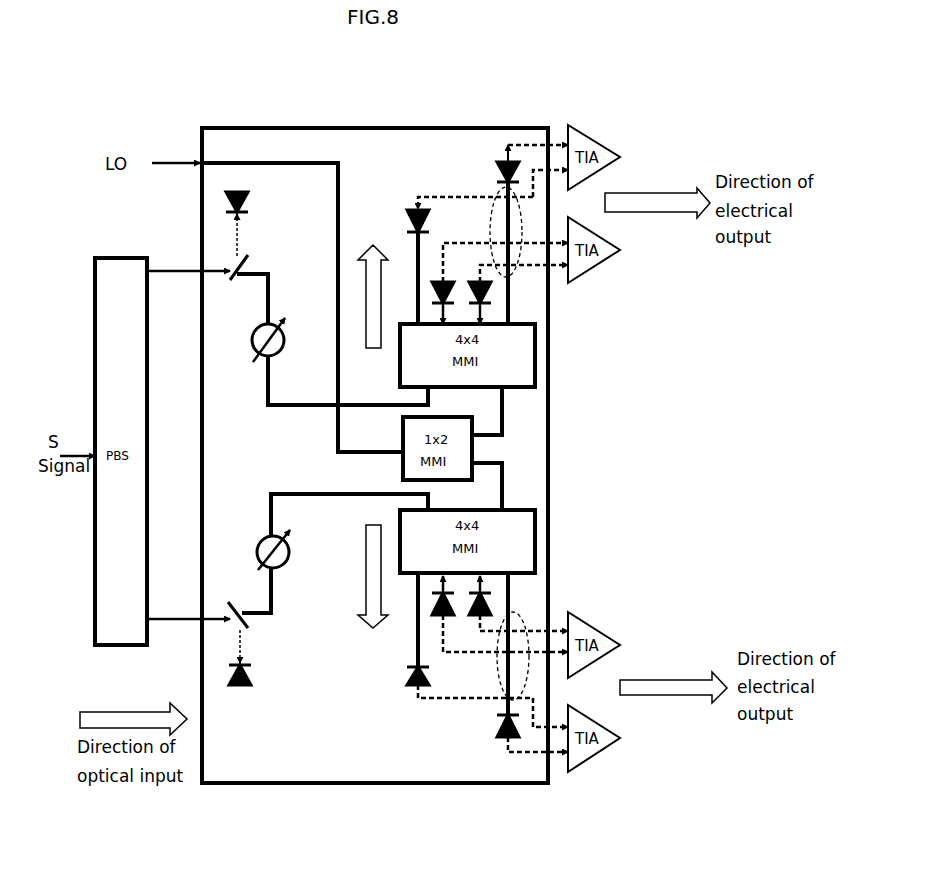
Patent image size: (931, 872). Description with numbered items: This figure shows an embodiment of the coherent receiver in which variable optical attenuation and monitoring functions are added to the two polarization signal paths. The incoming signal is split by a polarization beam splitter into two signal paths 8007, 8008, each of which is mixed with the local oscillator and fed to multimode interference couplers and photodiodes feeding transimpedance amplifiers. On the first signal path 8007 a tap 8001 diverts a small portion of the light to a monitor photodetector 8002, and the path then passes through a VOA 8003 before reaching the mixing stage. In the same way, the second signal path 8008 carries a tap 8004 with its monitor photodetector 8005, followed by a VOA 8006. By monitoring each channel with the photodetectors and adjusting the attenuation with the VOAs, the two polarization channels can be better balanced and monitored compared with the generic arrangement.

The tap 8001 is at (227, 262).
The monitor photodetector 8002 is at (238, 188).
The VOA 8003 is at (277, 317).
The tap 8004 is at (227, 630).
The monitor photodetector 8005 is at (250, 692).
The VOA 8006 is at (282, 572).
The signal path 8007 is at (308, 408).
The signal path 8008 is at (308, 490).